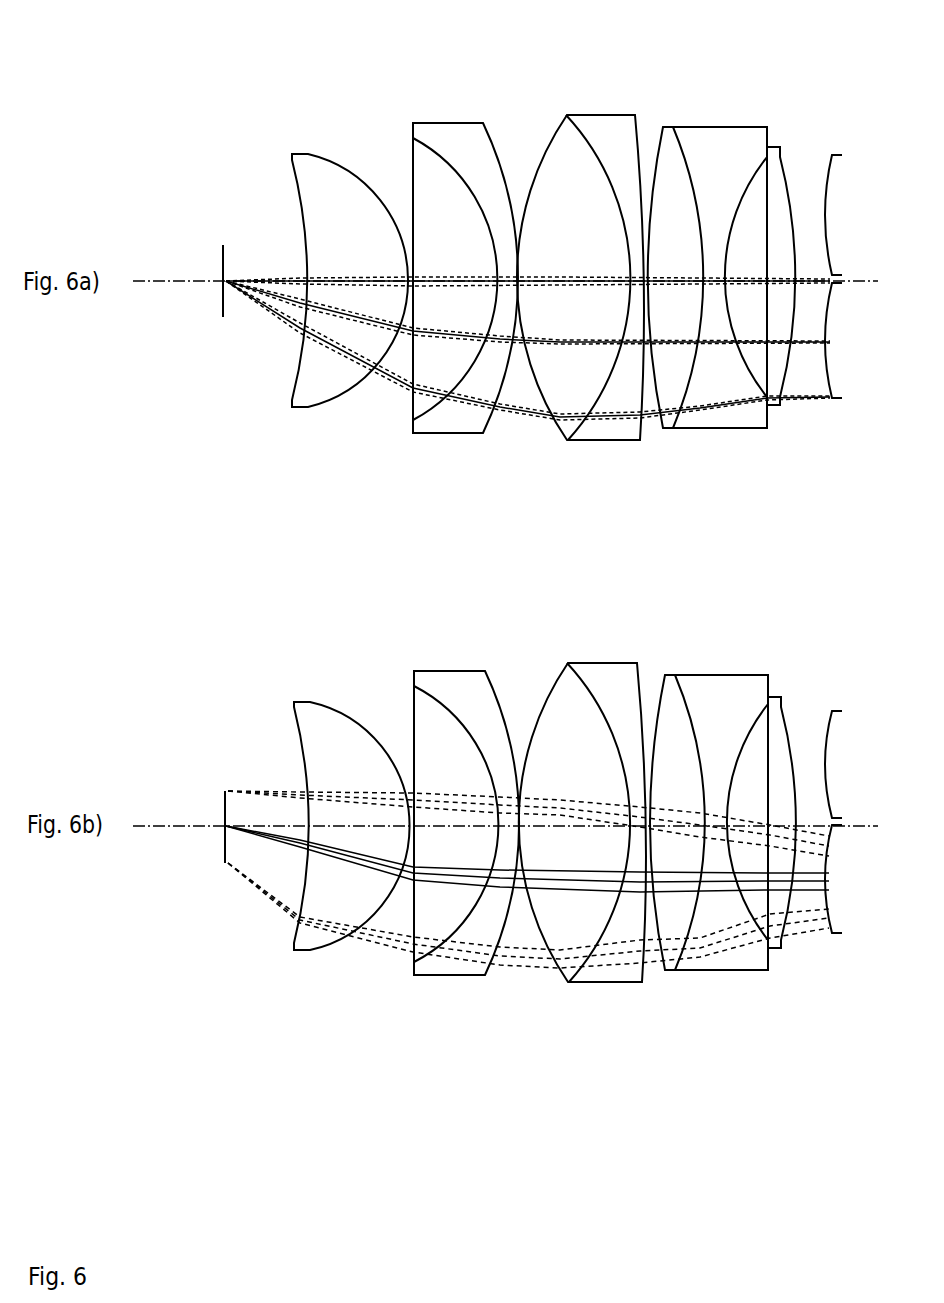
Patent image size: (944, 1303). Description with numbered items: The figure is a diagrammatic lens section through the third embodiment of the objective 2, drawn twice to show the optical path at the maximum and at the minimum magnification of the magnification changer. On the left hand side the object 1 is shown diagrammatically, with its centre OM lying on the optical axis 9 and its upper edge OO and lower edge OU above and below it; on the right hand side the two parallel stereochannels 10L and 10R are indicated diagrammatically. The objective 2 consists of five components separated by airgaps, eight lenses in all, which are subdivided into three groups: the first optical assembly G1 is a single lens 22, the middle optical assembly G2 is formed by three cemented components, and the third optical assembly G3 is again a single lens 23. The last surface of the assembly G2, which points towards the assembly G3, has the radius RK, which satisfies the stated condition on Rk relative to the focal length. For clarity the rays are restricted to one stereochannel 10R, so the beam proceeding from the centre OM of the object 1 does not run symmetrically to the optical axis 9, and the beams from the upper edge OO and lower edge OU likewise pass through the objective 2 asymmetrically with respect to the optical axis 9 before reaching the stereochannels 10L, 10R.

In FIG. 6A, the object 1 is at (222, 246).
In FIG. 6B, the object 1 is at (225, 791).
In FIG. 6A, the objective 2 is at (790, 102).
In FIG. 6B, the objective 2 is at (790, 653).
In FIG. 6A, the optical axis 9 is at (148, 280).
In FIG. 6B, the optical axis 9 is at (153, 825).
In FIG. 6A, the single lens 22 is at (366, 177).
In FIG. 6B, the single lens 22 is at (370, 720).
In FIG. 6A, the single lens 23 is at (787, 167).
In FIG. 6B, the single lens 23 is at (791, 716).
In FIG. 6A, the last radius of assembly G2 RK is at (746, 247).
In FIG. 6B, the last radius of assembly G2 RK is at (747, 795).
In FIG. 6A, the left stereochannel 10L is at (845, 215).
In FIG. 6B, the left stereochannel 10L is at (845, 764).
In FIG. 6A, the right stereochannel 10R is at (846, 340).
In FIG. 6B, the right stereochannel 10R is at (846, 879).
In FIG. 6A, the first optical assembly G1 is at (349, 302).
In FIG. 6B, the first optical assembly G1 is at (351, 853).
In FIG. 6A, the second optical assembly G2 is at (590, 290).
In FIG. 6B, the second optical assembly G2 is at (591, 842).
In FIG. 6A, the third optical assembly G3 is at (787, 305).
In FIG. 6B, the third optical assembly G3 is at (790, 854).
In FIG. 6A, the upper edge of the object OO is at (197, 253).
In FIG. 6B, the upper edge of the object OO is at (200, 786).
In FIG. 6A, the centre of the object OM is at (197, 276).
In FIG. 6B, the centre of the object OM is at (199, 821).
In FIG. 6A, the lower edge of the object OU is at (197, 299).
In FIG. 6B, the lower edge of the object OU is at (200, 863).